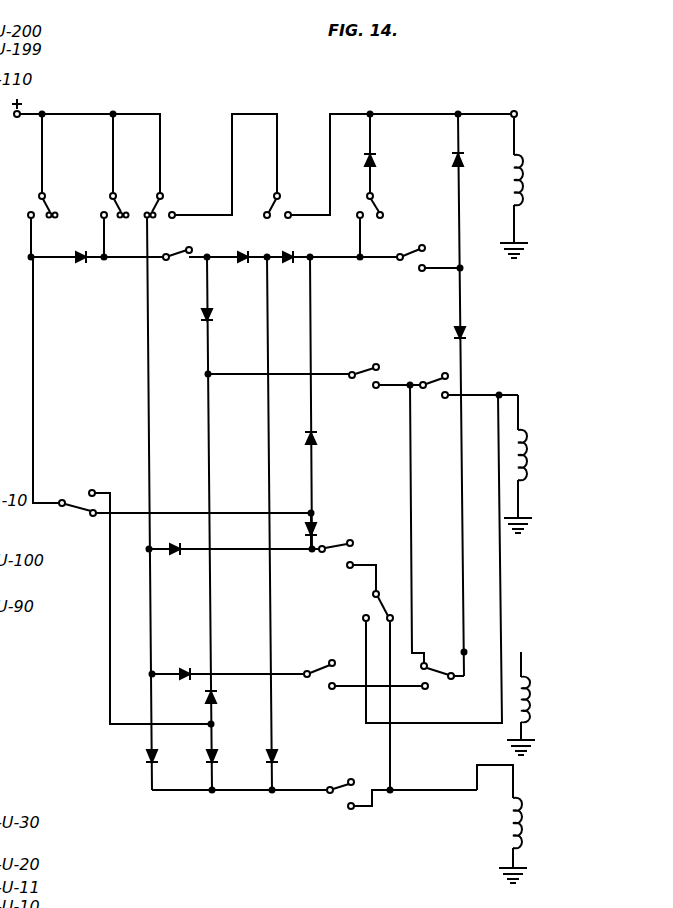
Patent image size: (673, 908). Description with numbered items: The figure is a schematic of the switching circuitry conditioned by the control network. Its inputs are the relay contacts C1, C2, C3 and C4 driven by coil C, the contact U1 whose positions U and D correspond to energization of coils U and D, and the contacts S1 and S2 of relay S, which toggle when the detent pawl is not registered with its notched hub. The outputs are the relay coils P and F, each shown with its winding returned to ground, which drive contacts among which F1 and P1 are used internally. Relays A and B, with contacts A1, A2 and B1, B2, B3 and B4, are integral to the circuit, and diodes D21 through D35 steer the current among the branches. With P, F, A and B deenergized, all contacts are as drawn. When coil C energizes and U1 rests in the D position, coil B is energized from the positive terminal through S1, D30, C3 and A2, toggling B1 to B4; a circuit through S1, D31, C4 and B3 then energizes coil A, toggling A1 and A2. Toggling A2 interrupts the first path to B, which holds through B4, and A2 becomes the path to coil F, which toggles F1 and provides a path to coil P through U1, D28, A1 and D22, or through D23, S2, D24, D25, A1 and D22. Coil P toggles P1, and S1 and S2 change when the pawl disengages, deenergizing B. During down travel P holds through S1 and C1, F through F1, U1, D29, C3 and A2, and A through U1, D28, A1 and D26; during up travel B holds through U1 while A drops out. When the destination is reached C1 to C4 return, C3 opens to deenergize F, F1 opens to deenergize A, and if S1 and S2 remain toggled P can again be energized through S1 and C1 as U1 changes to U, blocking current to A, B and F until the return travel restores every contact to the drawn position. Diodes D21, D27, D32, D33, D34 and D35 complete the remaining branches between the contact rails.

The relay contact F1 is at (51, 205).
The relay contact P1 is at (122, 201).
The relay contact S1 is at (170, 205).
The relay contact S2 is at (177, 265).
The relay contact C1 is at (286, 205).
The relay contact B1 is at (381, 205).
The relay contact A1 is at (425, 254).
The relay contact C2 is at (364, 369).
The relay contact B2 is at (434, 378).
The relay contact U1 is at (72, 496).
The U position U is at (97, 484).
The D position D is at (93, 524).
The relay contact C3 is at (349, 552).
The relay contact A2 is at (384, 602).
The relay contact C4 is at (319, 670).
The relay contact B3 is at (437, 682).
The relay contact B4 is at (350, 783).
The diode D21 is at (387, 151).
The diode D22 is at (476, 150).
The diode D23 is at (90, 270).
The diode D24 is at (238, 269).
The diode D25 is at (292, 269).
The diode D26 is at (481, 332).
The diode D27 is at (225, 324).
The diode D28 is at (330, 442).
The diode D29 is at (333, 525).
The diode D30 is at (183, 560).
The diode D31 is at (186, 662).
The diode D32 is at (230, 701).
The diode D33 is at (169, 747).
The diode D34 is at (229, 747).
The diode D35 is at (290, 747).
The relay coil P is at (508, 206).
The relay coil F is at (519, 473).
The relay coil A is at (521, 706).
The relay coil B is at (506, 840).